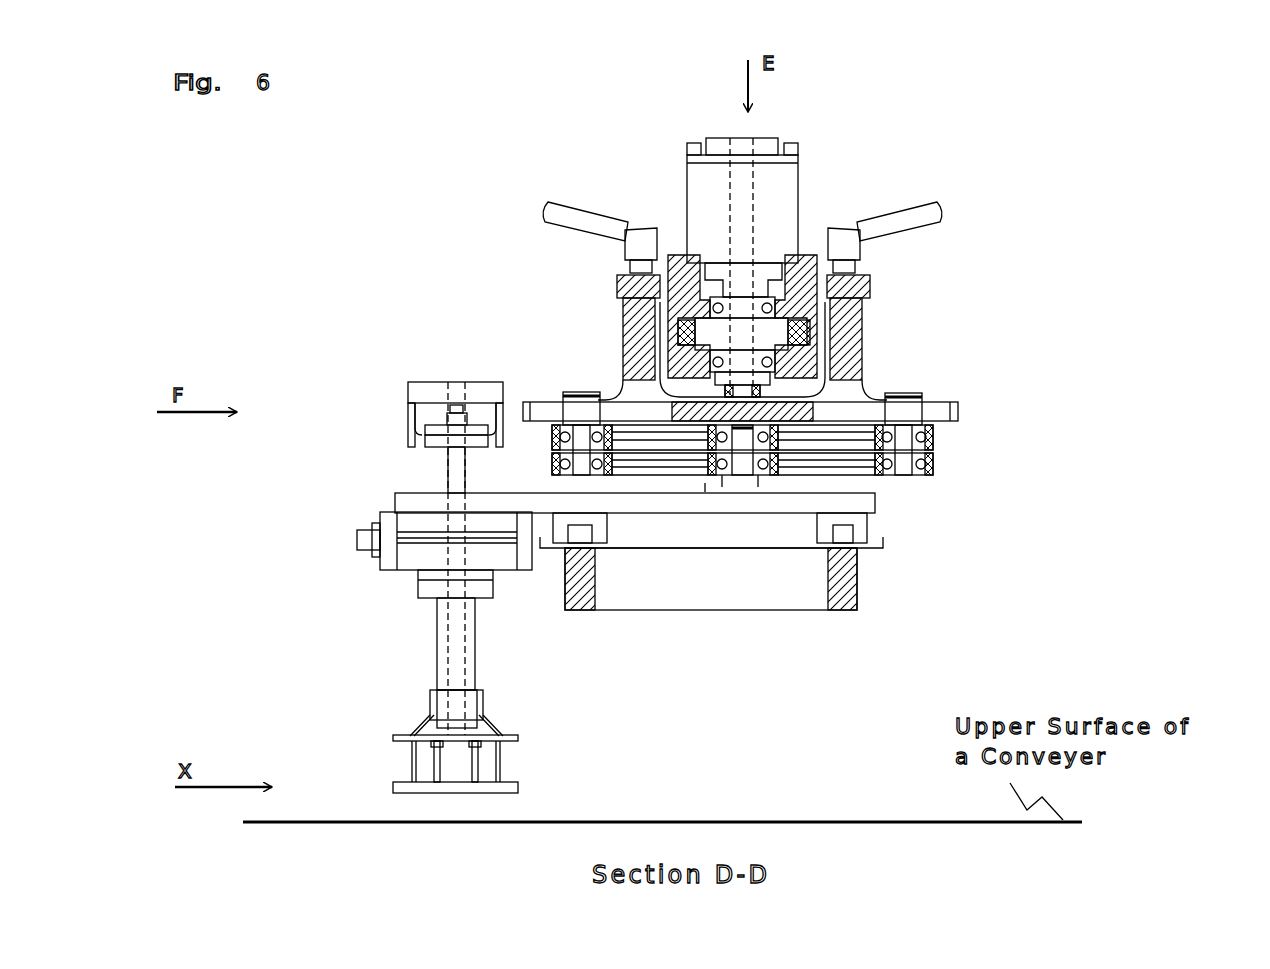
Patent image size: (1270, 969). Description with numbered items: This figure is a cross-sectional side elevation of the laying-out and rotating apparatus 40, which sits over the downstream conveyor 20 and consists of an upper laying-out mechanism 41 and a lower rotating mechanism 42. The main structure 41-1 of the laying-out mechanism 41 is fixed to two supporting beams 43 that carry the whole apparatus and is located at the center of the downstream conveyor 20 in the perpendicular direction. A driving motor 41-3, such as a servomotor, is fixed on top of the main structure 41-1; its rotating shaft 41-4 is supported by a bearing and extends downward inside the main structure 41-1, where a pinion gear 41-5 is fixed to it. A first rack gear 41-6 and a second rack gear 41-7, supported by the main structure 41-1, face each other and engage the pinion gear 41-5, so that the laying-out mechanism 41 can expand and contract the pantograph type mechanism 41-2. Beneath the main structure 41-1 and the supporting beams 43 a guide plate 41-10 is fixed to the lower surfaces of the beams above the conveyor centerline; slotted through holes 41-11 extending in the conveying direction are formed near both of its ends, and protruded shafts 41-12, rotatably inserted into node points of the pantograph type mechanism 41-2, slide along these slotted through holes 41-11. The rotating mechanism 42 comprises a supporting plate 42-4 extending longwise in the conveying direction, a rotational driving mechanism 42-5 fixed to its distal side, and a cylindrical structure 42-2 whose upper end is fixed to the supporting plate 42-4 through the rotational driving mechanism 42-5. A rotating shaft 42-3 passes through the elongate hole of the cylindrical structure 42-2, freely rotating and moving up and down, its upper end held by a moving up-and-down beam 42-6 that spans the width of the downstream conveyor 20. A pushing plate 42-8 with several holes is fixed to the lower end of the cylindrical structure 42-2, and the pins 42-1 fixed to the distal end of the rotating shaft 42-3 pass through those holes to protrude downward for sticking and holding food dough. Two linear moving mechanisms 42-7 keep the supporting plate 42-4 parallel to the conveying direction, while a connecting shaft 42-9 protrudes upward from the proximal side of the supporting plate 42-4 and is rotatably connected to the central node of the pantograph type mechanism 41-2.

The downstream conveyor 20 is at (810, 820).
The laying-out and rotating apparatus 40 is at (300, 242).
The laying-out mechanism 41 is at (1000, 234).
The main structure 41-1 is at (800, 300).
The pantograph type mechanism 41-2 is at (858, 404).
The driving motor 41-3 is at (772, 187).
The rotating shaft 41-4 is at (743, 358).
The pinion gear 41-5 is at (722, 337).
The first rack gear 41-6 is at (813, 300).
The second rack gear 41-7 is at (688, 333).
The guide plate 41-10 is at (830, 433).
The slotted through holes 41-11 is at (943, 413).
The protruded shafts 41-12 is at (930, 440).
The rotating mechanism 42 is at (343, 472).
The pins 42-1 is at (473, 762).
The cylindrical structure 42-2 is at (437, 637).
The rotating shaft 42-3 is at (453, 678).
The supporting plate 42-4 is at (557, 503).
The rotational driving mechanism 42-5 is at (410, 522).
The moving up-and-down beam 42-6 is at (443, 392).
The linear moving mechanisms 42-7 is at (582, 535).
The pushing plate 42-8 is at (395, 783).
The connecting shaft 42-9 is at (840, 540).
The supporting beams 43 is at (638, 325).